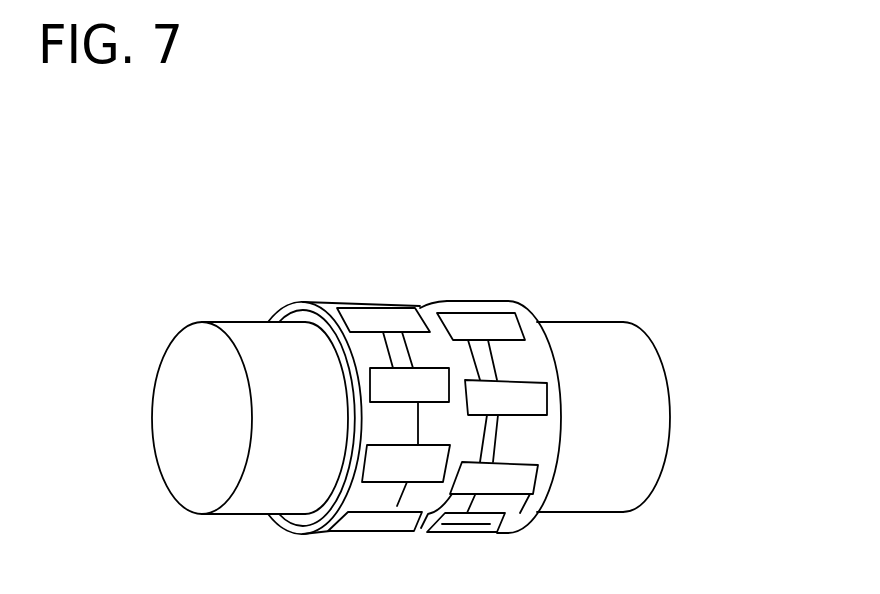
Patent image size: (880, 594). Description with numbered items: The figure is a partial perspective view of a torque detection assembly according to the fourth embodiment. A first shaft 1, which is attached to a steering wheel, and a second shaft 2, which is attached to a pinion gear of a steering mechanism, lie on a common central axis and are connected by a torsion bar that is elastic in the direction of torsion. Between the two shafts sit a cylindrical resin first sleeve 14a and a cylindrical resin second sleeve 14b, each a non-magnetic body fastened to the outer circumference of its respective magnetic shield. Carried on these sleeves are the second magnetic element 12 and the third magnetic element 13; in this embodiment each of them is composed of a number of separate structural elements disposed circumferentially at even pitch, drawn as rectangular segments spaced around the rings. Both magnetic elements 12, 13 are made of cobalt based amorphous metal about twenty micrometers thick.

The first shaft 1 is at (590, 330).
The second shaft 2 is at (253, 330).
The second magnetic element 12 is at (525, 390).
The third magnetic element 13 is at (393, 380).
The first sleeve 14a is at (517, 508).
The second sleeve 14b is at (347, 502).